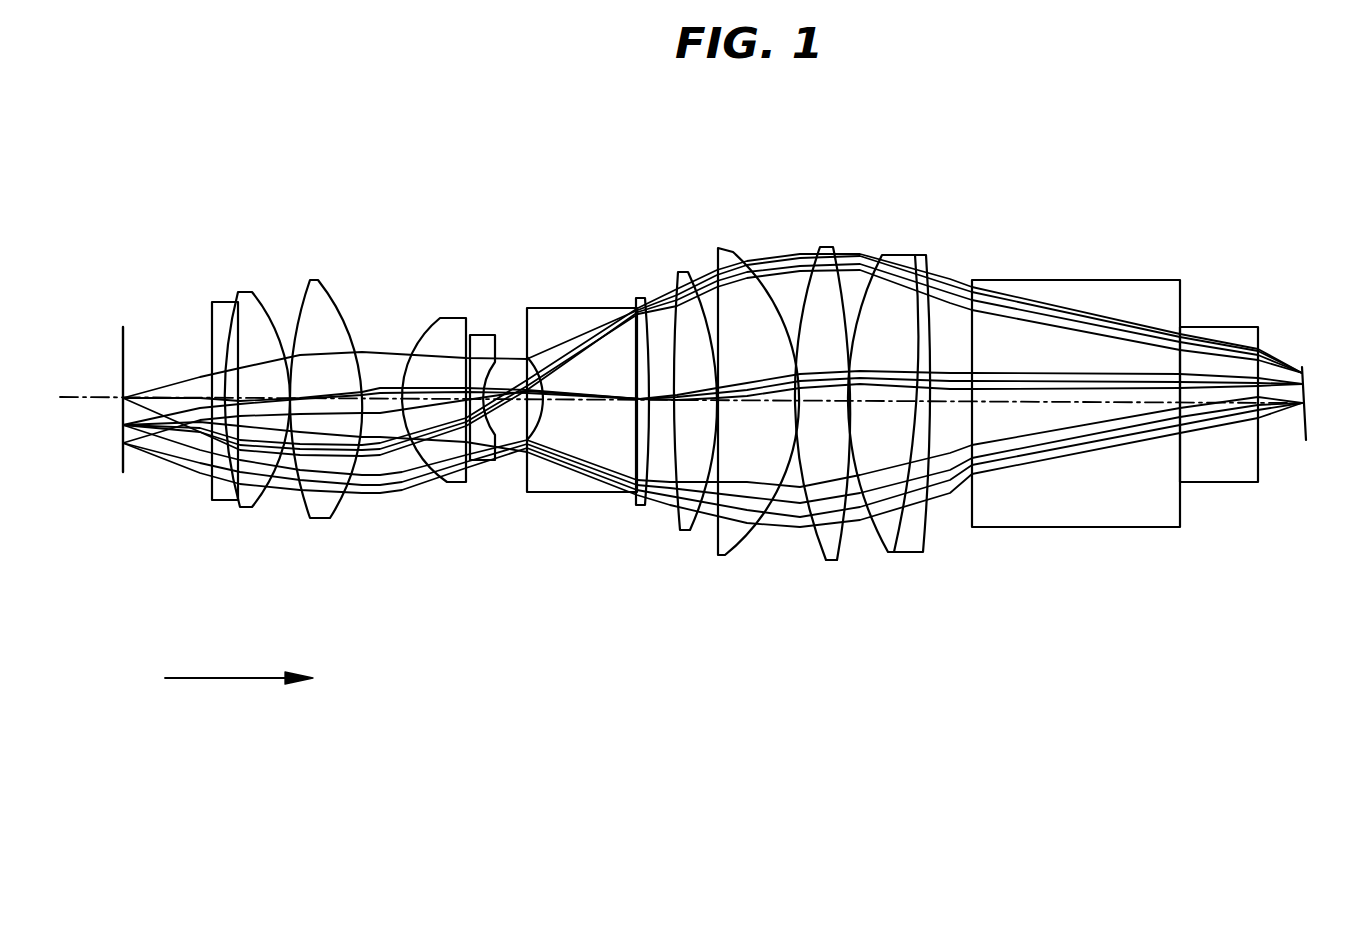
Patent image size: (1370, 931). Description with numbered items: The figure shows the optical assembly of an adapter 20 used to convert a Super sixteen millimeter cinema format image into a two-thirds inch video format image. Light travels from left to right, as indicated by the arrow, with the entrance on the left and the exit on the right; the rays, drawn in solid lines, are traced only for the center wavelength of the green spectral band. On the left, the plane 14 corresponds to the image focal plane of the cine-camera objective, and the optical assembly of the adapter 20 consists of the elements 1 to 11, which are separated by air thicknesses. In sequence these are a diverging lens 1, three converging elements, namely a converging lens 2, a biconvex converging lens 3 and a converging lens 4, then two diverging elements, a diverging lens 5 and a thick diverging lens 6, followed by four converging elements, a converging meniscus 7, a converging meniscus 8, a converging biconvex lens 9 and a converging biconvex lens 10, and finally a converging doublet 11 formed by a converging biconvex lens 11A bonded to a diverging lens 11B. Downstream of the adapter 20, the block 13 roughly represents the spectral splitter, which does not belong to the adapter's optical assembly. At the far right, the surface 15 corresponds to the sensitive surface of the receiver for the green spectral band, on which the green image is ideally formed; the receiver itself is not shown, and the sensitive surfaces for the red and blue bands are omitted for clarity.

The diverging lens 1 is at (222, 500).
The converging lens 2 is at (248, 292).
The biconvex converging lens 3 is at (320, 519).
The converging lens 4 is at (446, 318).
The diverging lens 5 is at (487, 462).
The diverging lens 6 is at (575, 308).
The converging meniscus 7 is at (647, 506).
The converging meniscus 8 is at (681, 272).
The converging biconvex lens 9 is at (722, 555).
The converging biconvex lens 10 is at (826, 247).
The converging doublet 11 is at (891, 475).
The converging biconvex lens 11A is at (873, 552).
The diverging lens 11B is at (925, 552).
The spectral splitter 13 is at (1112, 175).
The image focal plane 14 is at (122, 353).
The sensitive surface 15 is at (1306, 437).
The adapter 20 is at (560, 172).